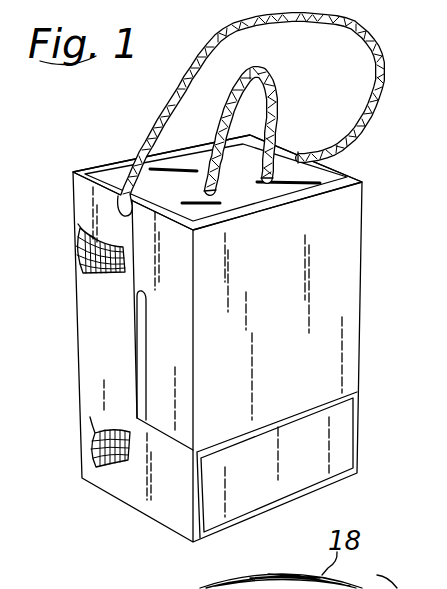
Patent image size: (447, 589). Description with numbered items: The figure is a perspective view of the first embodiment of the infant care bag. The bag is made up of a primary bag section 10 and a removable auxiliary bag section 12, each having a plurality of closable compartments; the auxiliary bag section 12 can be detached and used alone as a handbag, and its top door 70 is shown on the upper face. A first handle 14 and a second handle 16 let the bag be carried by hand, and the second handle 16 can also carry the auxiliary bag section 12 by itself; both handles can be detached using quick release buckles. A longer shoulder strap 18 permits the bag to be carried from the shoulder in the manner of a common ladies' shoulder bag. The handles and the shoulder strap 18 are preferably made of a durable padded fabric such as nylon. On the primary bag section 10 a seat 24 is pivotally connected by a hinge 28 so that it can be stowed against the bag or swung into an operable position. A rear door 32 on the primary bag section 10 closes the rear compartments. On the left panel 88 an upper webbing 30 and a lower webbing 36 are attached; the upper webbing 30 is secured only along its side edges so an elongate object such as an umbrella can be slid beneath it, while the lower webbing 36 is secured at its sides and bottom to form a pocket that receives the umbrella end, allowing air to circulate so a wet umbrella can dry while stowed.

The primary bag section 10 is at (117, 493).
The removable auxiliary bag section 12 is at (342, 267).
The first handle 14 is at (236, 78).
The second handle 16 is at (284, 80).
The shoulder strap 18 is at (384, 58).
The seat 24 is at (137, 325).
The hinge 28 is at (110, 175).
The upper webbing 30 is at (77, 250).
The rear door 32 is at (334, 430).
The lower webbing 36 is at (92, 452).
The top door 70 is at (314, 173).
The left panel 88 is at (88, 313).